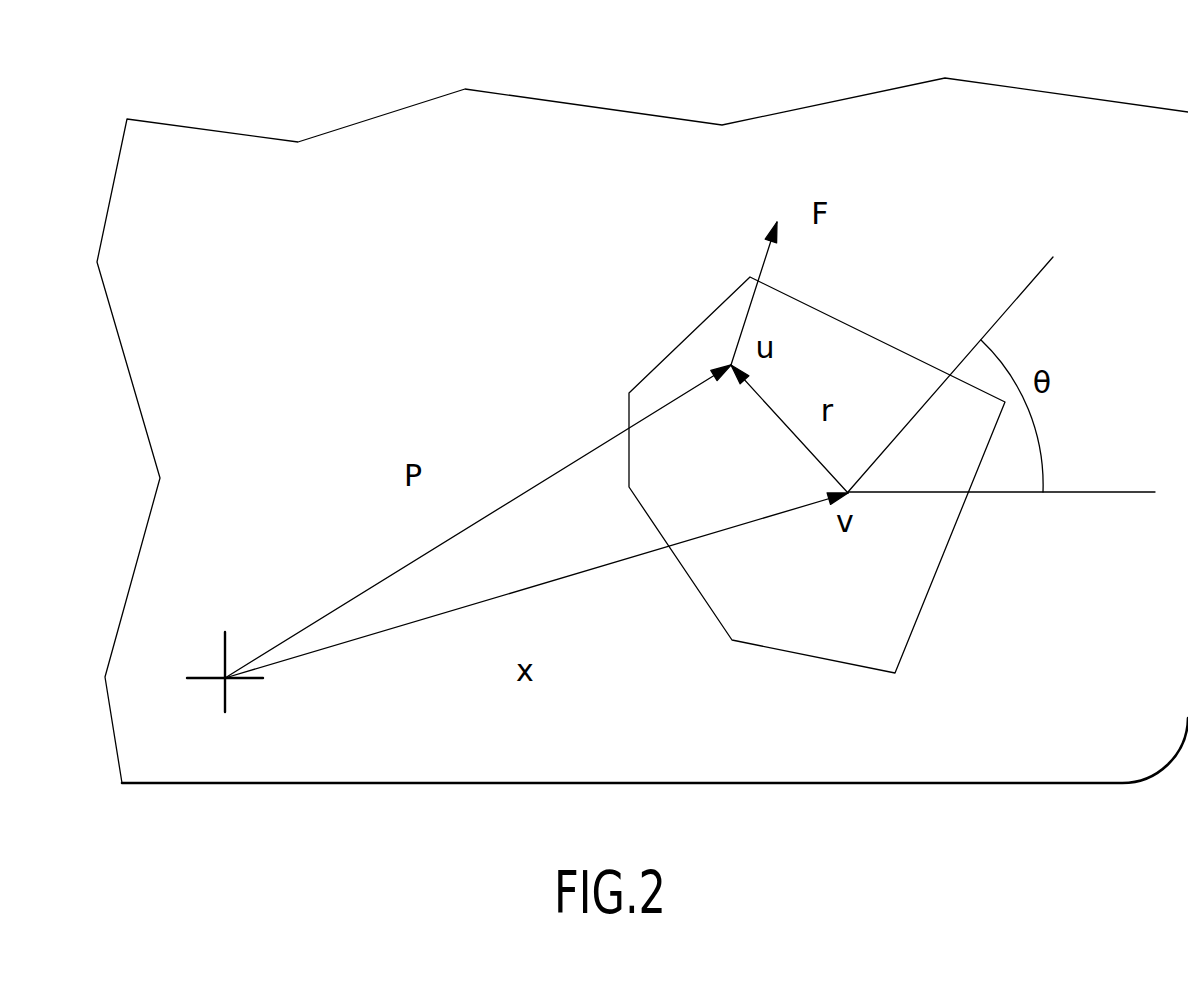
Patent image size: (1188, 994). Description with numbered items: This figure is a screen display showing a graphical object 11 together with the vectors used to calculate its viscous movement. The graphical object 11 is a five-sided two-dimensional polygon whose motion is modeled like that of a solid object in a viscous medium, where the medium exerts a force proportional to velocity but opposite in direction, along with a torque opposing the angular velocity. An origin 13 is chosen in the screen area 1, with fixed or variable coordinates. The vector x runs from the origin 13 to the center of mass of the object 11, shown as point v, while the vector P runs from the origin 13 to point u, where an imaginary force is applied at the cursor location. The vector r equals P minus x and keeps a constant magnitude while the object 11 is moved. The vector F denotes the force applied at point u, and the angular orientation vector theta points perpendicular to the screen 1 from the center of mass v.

The screen area 1 is at (382, 143).
The graphical object 11 is at (923, 602).
The origin 13 is at (230, 681).